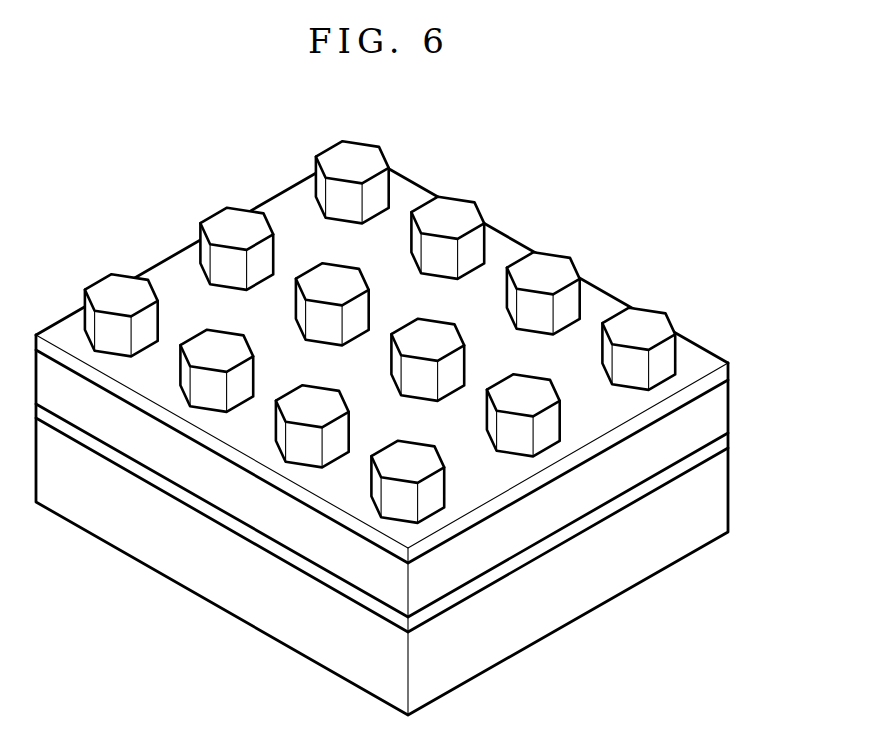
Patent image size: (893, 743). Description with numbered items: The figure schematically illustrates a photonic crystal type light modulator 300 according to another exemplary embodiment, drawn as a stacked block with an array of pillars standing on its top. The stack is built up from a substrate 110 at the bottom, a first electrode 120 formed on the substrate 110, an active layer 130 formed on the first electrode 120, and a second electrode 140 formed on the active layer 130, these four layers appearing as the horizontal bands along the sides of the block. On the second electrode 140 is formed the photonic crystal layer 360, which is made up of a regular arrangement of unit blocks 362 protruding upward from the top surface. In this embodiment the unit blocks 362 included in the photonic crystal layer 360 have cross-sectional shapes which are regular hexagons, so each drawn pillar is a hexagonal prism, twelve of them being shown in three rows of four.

The photonic crystal type light modulator 300 is at (126, 186).
The substrate 110 is at (729, 494).
The first electrode 120 is at (729, 445).
The active layer 130 is at (729, 411).
The second electrode 140 is at (729, 373).
The photonic crystal layer 360 is at (593, 247).
The unit block 362 is at (458, 212).